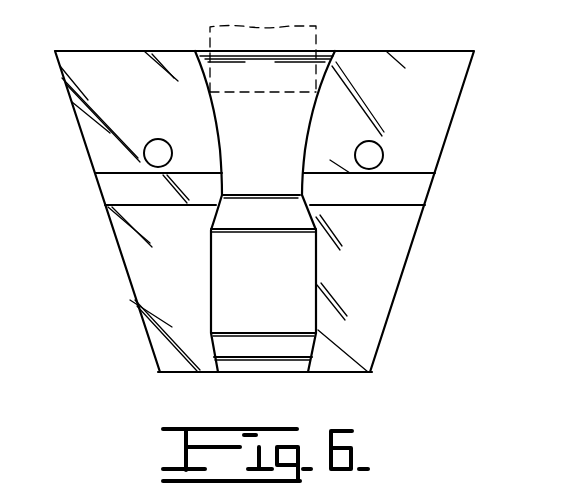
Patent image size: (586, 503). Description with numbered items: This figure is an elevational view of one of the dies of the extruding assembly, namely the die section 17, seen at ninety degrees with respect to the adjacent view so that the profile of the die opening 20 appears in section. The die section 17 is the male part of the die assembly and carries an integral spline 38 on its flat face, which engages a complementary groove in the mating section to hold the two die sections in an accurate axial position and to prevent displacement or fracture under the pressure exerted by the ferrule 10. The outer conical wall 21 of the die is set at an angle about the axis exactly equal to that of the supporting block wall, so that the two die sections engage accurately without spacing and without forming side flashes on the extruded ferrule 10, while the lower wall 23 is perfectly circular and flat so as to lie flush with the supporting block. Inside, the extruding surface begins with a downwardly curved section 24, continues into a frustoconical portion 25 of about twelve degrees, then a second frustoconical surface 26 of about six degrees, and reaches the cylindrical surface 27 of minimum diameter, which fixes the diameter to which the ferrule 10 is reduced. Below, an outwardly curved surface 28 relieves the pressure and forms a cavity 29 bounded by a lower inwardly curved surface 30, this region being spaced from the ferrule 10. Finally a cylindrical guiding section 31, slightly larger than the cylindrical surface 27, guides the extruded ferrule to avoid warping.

The ferrule 10 is at (316, 40).
The die section 17 is at (436, 123).
The die opening 20 is at (258, 302).
The conical wall 21 is at (118, 246).
The lower wall 23 is at (165, 374).
The downwardly curved section 24 is at (318, 58).
The frustoconical portion 25 is at (308, 85).
The second frustoconical surface 26 is at (304, 127).
The cylindrical surface 27 is at (298, 196).
The outwardly curved surface 28 is at (301, 214).
The cavity 29 is at (317, 263).
The lower inwardly curved surface 30 is at (301, 344).
The cylindrical guiding section 31 is at (293, 373).
The spline 38 is at (112, 191).